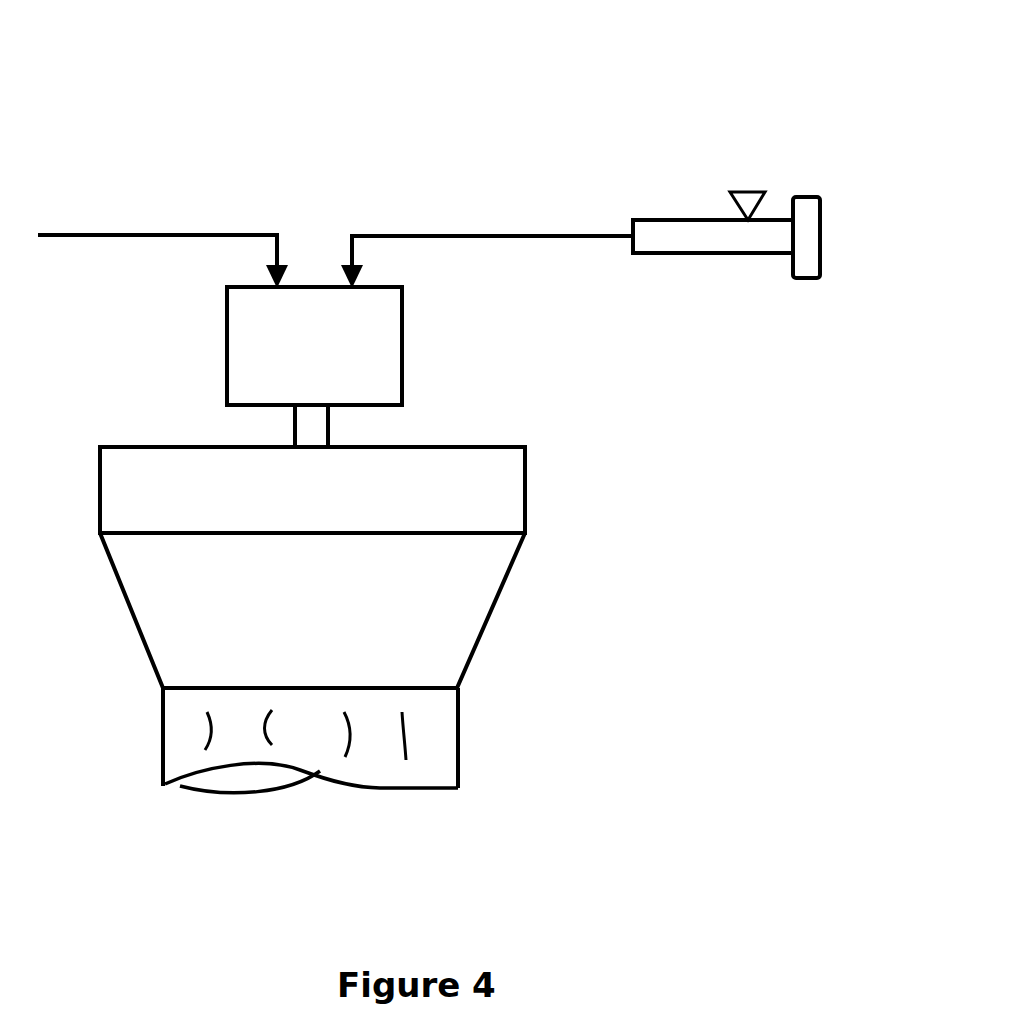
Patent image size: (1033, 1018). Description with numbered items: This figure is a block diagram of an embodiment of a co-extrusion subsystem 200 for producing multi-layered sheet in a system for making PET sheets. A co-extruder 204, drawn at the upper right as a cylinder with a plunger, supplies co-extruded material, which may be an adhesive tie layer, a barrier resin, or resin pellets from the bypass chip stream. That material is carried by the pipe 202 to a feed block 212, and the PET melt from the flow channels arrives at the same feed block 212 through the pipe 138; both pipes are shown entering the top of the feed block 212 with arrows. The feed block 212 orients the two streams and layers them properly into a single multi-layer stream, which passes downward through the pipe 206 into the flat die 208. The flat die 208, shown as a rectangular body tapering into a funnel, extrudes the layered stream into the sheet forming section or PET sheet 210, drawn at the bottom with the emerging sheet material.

The co-extrusion subsystem 200 is at (818, 133).
The pipe 138 is at (103, 235).
The pipe 202 is at (423, 235).
The co-extruder 204 is at (668, 220).
The feed block 212 is at (227, 348).
The pipe 206 is at (330, 420).
The flat die 208 is at (527, 488).
The PET sheet 210 is at (163, 740).